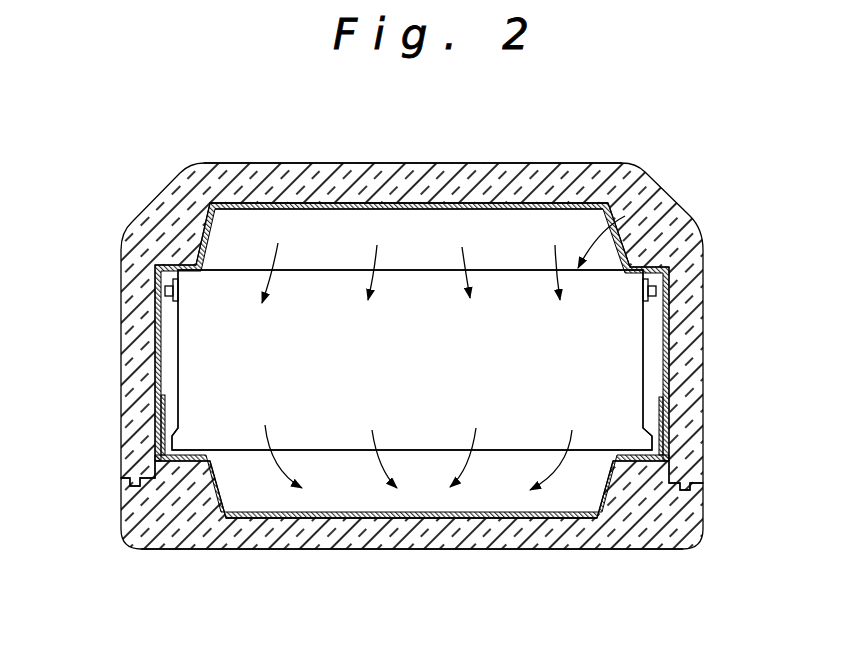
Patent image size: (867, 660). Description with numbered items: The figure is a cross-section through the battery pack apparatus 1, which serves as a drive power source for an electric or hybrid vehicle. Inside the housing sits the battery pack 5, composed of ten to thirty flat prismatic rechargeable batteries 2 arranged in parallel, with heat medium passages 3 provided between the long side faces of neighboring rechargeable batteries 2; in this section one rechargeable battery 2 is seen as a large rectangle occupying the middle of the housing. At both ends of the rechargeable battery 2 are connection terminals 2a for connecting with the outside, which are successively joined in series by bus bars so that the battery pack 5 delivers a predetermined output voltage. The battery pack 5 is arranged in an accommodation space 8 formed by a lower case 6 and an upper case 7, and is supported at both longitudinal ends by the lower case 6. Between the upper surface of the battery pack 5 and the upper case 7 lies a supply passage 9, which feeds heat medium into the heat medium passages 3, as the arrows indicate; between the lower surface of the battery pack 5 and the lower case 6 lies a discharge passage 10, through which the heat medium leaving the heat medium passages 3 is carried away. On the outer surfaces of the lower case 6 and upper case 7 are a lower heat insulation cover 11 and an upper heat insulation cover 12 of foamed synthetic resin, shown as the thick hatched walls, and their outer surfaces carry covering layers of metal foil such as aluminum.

The battery pack apparatus 1 is at (400, 368).
The rechargeable battery 2 is at (590, 350).
The connection terminal 2a is at (170, 289).
The heat medium passage 3 is at (424, 390).
The battery pack 5 is at (637, 205).
The lower case 6 is at (462, 520).
The upper case 7 is at (531, 204).
The accommodation space 8 is at (328, 245).
The supply passage 9 is at (426, 258).
The discharge passage 10 is at (433, 500).
The lower heat insulation cover 11 is at (355, 535).
The upper heat insulation cover 12 is at (446, 190).